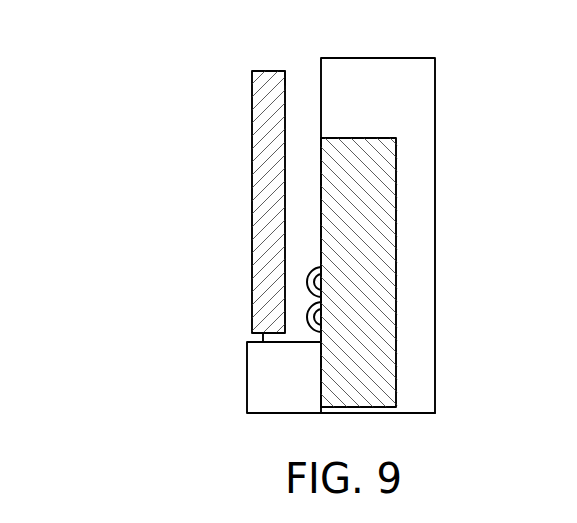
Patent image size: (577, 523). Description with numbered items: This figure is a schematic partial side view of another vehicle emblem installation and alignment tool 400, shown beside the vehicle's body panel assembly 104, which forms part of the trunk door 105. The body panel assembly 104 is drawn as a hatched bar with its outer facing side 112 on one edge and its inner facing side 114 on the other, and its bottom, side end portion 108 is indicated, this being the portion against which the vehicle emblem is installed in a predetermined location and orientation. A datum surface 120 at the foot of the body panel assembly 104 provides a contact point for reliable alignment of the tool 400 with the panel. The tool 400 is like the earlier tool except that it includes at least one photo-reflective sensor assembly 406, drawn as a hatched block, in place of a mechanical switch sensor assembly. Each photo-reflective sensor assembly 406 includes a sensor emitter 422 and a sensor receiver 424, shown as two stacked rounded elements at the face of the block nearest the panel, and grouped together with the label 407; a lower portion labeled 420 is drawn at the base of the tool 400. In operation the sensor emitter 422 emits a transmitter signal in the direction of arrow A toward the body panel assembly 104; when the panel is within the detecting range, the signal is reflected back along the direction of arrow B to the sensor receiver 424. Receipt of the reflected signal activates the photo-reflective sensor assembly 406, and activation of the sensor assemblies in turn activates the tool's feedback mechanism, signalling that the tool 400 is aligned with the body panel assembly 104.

The body panel assembly 104 is at (188, 179).
The trunk door 105 is at (188, 179).
The bottom, side end portion 108 is at (203, 222).
The outer facing side 112 is at (287, 78).
The inner facing side 114 is at (236, 202).
The datum surface 120 is at (263, 342).
The tool 400 is at (463, 92).
The photo-reflective sensor assembly 406 is at (397, 353).
The rollers 407 is at (328, 342).
The base 420 is at (260, 414).
The sensor emitter 422 is at (313, 334).
The sensor receiver 424 is at (309, 270).
The arrow A is at (298, 316).
The arrow B is at (306, 278).